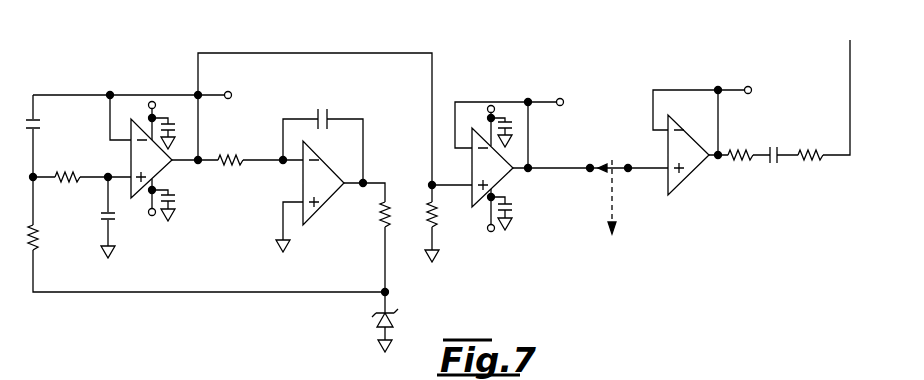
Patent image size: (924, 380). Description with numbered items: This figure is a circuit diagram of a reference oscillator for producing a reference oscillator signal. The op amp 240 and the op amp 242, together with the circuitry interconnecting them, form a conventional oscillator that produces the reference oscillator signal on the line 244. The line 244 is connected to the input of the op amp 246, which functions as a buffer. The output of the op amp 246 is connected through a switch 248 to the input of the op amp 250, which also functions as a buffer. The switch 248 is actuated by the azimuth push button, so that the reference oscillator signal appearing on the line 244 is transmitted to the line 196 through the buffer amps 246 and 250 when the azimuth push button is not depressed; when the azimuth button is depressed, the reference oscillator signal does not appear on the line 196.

The line 196 is at (850, 83).
The op amp 240 is at (165, 167).
The op amp 242 is at (330, 208).
The line 244 is at (328, 52).
The op amp 246 is at (504, 181).
The switch 248 is at (616, 171).
The op amp 250 is at (698, 165).